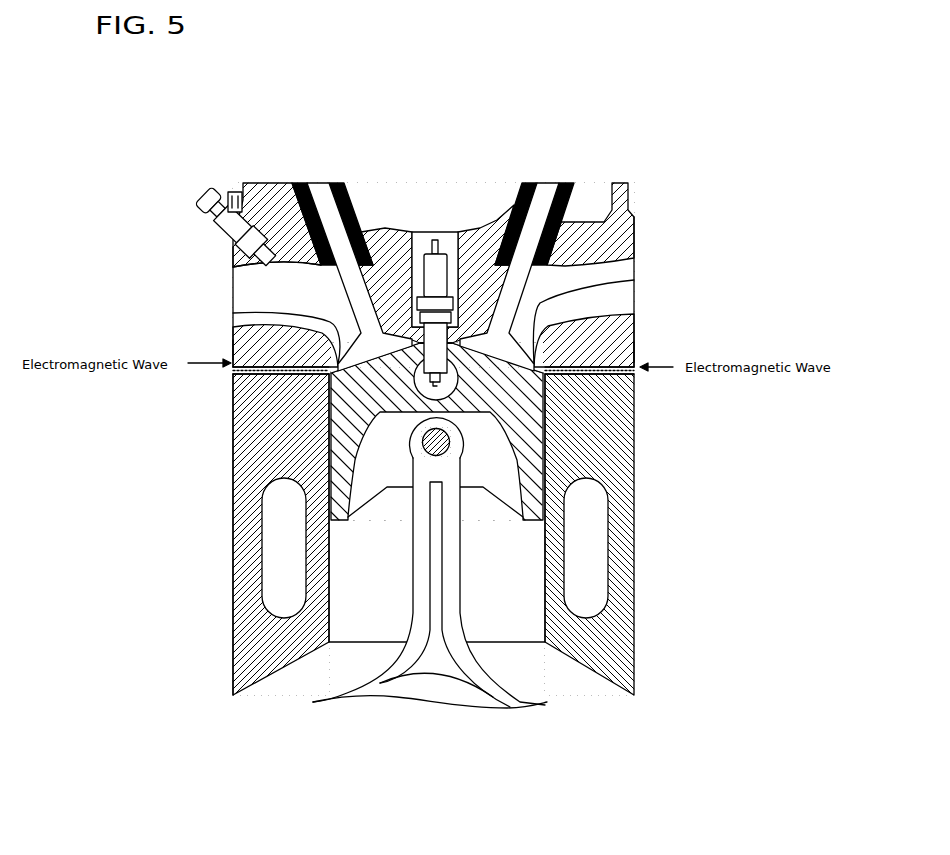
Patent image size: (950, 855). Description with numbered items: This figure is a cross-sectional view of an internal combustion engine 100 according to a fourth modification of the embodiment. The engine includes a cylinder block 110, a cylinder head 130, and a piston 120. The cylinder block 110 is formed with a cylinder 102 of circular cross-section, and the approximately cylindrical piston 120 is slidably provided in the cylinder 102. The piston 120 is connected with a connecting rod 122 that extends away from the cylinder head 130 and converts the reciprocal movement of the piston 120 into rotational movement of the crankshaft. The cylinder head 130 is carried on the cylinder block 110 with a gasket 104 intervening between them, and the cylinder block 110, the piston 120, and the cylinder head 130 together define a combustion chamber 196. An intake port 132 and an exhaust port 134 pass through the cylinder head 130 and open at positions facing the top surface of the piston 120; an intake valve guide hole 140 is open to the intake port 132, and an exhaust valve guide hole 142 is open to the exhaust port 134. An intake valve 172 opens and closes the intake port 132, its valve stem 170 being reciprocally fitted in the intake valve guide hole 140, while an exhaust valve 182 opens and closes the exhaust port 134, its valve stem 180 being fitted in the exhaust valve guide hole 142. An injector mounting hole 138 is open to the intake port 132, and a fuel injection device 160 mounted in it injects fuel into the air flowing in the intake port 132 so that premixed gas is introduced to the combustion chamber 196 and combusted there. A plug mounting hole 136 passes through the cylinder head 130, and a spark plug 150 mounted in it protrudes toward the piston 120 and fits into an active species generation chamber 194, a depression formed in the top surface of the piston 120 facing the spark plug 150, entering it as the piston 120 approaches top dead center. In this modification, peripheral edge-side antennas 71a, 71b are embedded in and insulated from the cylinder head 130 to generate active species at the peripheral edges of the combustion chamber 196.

The internal combustion engine 100 is at (606, 95).
The cylinder 102 is at (333, 605).
The gasket 104 is at (233, 372).
The cylinder block 110 is at (634, 443).
The piston 120 is at (513, 522).
The connecting rod 122 is at (467, 630).
The cylinder head 130 is at (634, 346).
The intake port 132 is at (268, 324).
The exhaust port 134 is at (607, 315).
The plug mounting hole 136 is at (459, 232).
The injector mounting hole 138 is at (255, 272).
The intake valve guide hole 140 is at (330, 278).
The exhaust valve guide hole 142 is at (600, 263).
The spark plug 150 is at (424, 277).
The fuel injection device 160 is at (206, 222).
The valve stem 170 is at (328, 198).
The intake valve 172 is at (327, 319).
The valve stem 180 is at (545, 190).
The exhaust valve 182 is at (600, 300).
The active species generation chamber 194 is at (413, 398).
The combustion chamber 196 is at (233, 404).
The peripheral edge-side antenna 71a is at (233, 350).
The peripheral edge-side antenna 71b is at (634, 352).